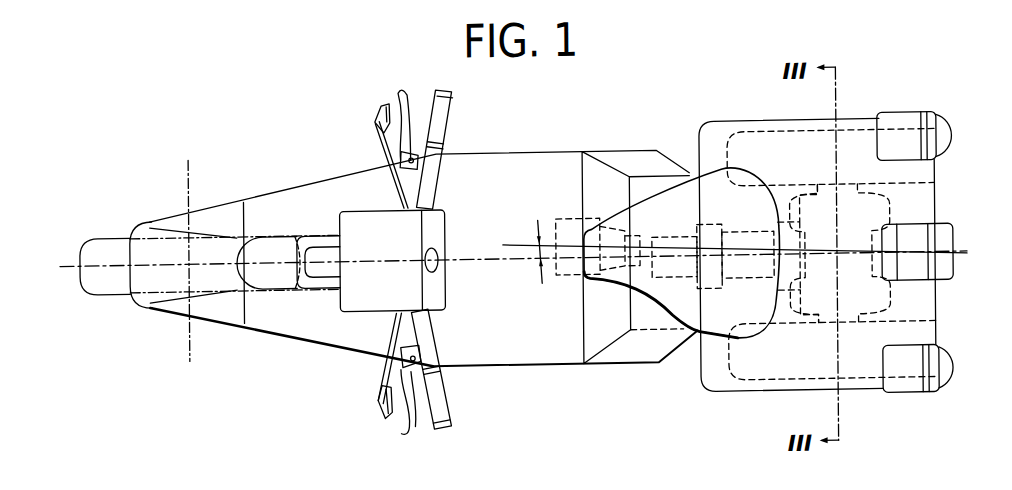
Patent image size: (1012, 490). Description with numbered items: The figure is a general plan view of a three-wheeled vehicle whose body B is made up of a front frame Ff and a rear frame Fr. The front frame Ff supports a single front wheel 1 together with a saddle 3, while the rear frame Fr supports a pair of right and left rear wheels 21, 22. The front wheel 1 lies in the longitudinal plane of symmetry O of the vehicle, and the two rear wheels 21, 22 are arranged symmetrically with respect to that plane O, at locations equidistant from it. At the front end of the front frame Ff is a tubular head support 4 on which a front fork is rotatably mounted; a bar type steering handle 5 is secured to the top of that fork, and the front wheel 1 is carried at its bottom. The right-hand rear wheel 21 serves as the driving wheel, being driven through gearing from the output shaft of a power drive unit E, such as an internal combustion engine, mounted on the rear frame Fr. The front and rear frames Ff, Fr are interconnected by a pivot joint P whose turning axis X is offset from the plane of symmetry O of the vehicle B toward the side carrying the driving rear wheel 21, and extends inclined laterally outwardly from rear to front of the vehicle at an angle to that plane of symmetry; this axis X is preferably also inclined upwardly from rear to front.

The front wheel 1 is at (113, 241).
The saddle 3 is at (703, 326).
The tubular head support 4 is at (282, 251).
The bar type steering handle 5 is at (442, 402).
The right-hand-side rear wheel 21 is at (947, 160).
The left rear wheel 22 is at (947, 357).
The body B is at (608, 131).
The front frame Ff is at (500, 171).
The rear frame Fr is at (735, 127).
The power drive unit E is at (773, 222).
The pivot joint P is at (598, 220).
The turning axis X is at (518, 244).
The longitudinal plane of symmetry O is at (470, 262).